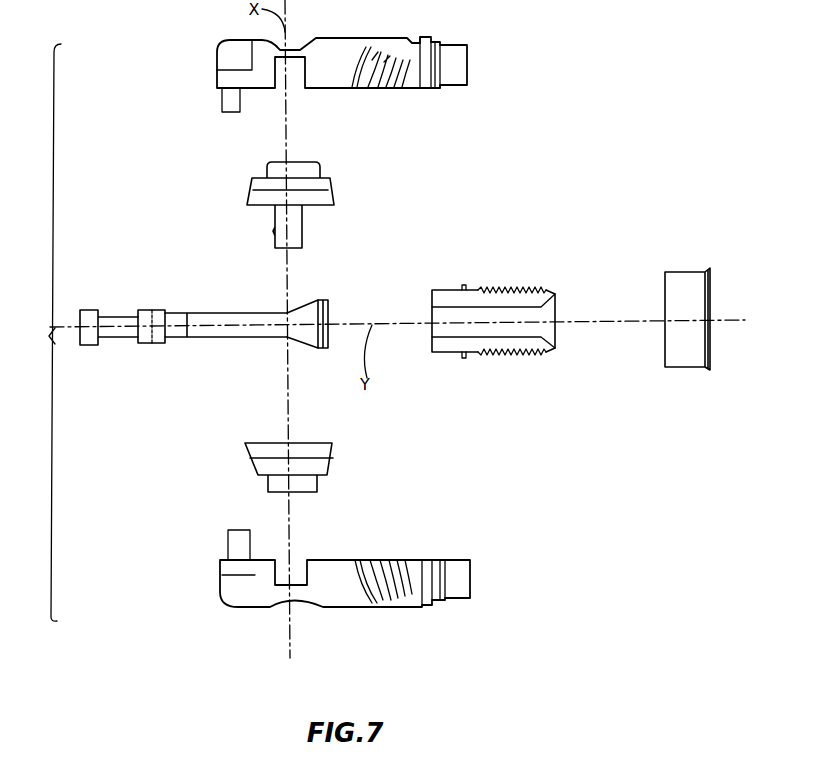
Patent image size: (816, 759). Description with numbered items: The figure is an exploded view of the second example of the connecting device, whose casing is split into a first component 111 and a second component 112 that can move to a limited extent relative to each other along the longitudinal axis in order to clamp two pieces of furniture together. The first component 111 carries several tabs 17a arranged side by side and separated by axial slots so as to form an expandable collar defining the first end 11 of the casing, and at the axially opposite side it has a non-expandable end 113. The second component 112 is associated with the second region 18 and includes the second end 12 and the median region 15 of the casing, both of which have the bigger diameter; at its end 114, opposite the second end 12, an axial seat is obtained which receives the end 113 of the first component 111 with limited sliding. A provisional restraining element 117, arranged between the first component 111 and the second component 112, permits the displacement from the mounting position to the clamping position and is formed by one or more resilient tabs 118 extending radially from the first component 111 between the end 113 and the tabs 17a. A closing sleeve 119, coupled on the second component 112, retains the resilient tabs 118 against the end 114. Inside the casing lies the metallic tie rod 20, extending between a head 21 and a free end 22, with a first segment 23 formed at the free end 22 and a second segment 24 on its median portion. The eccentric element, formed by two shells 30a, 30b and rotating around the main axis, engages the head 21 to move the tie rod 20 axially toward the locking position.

The first end 11 is at (494, 325).
The second end 12 is at (215, 62).
The median region 15 is at (377, 40).
The tabs 17a is at (521, 290).
The second region 18 is at (392, 52).
The tie rod 20 is at (227, 308).
The head 21 is at (90, 308).
The free end 22 is at (329, 312).
The first segment 23 is at (309, 301).
The second segment 24 is at (152, 348).
The shell of eccentric element 30a is at (249, 186).
The shell of eccentric element 30b is at (245, 455).
The first component 111 is at (480, 288).
The second component 112 is at (337, 32).
The end 113 is at (436, 351).
The end 114 is at (468, 68).
The provisional restraining element 117 is at (465, 281).
The resilient tabs 118 is at (466, 358).
The closing sleeve 119 is at (680, 272).